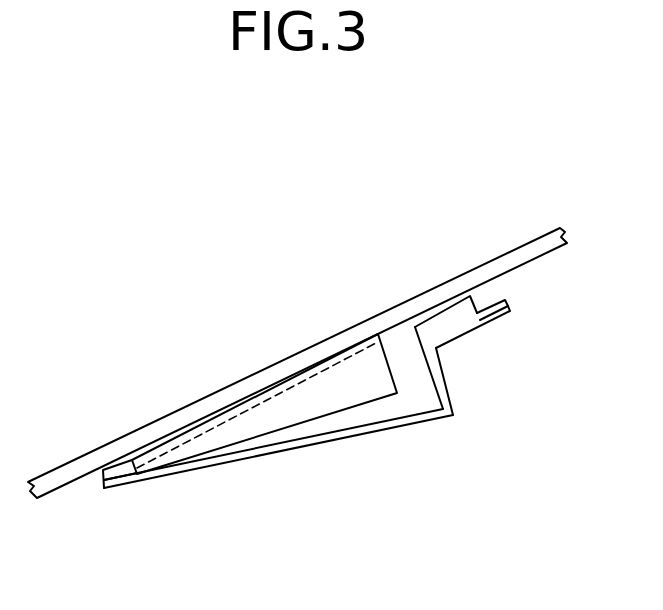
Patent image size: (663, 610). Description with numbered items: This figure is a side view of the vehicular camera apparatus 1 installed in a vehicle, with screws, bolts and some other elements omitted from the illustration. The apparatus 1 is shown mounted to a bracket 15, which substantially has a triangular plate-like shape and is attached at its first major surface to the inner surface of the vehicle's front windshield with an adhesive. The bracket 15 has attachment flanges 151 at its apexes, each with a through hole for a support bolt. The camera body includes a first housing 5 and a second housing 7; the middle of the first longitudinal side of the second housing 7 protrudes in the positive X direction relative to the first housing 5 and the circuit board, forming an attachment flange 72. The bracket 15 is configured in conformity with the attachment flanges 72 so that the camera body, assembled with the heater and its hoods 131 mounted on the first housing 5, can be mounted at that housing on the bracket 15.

The vehicular camera apparatus 1 is at (466, 168).
The bracket 15 is at (420, 320).
The hoods 131 is at (330, 390).
The attachment flanges 151 is at (117, 462).
The attachment flange 72 is at (122, 482).
The first housing 5 is at (423, 376).
The second housing 7 is at (456, 408).